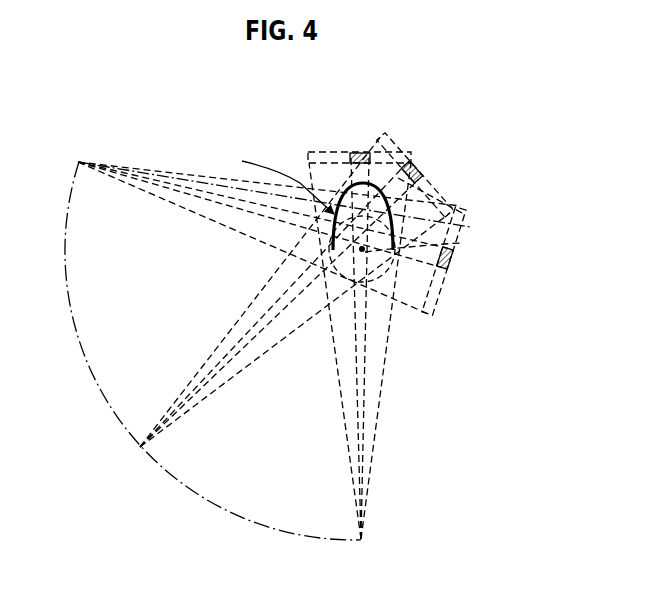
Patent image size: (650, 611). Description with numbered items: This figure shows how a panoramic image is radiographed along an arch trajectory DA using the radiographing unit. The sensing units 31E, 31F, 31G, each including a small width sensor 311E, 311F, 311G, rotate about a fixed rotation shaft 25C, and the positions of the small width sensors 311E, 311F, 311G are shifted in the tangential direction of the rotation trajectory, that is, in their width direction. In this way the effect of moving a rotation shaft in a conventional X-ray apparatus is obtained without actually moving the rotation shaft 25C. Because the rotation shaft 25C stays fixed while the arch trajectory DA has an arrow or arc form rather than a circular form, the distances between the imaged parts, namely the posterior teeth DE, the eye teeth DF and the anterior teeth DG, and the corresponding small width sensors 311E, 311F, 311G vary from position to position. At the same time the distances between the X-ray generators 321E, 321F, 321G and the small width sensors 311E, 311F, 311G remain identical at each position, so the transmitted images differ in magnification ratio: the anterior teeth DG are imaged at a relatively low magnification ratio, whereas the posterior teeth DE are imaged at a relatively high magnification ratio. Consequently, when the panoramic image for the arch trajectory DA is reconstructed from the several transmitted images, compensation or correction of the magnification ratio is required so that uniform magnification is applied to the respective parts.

The rotation shaft 25C is at (360, 250).
The sensing unit 31E is at (442, 304).
The sensing unit 31F is at (442, 190).
The sensing unit 31G is at (323, 151).
The small width sensor 311E is at (453, 259).
The small width sensor 311F is at (417, 165).
The small width sensor 311G is at (358, 153).
The X-ray generator 321E is at (78, 162).
The X-ray generator 321F is at (140, 447).
The X-ray generator 321G is at (361, 539).
The arch trajectory DA is at (274, 189).
The posterior teeth DE is at (433, 238).
The eye teeth DF is at (403, 160).
The anterior teeth DG is at (346, 172).